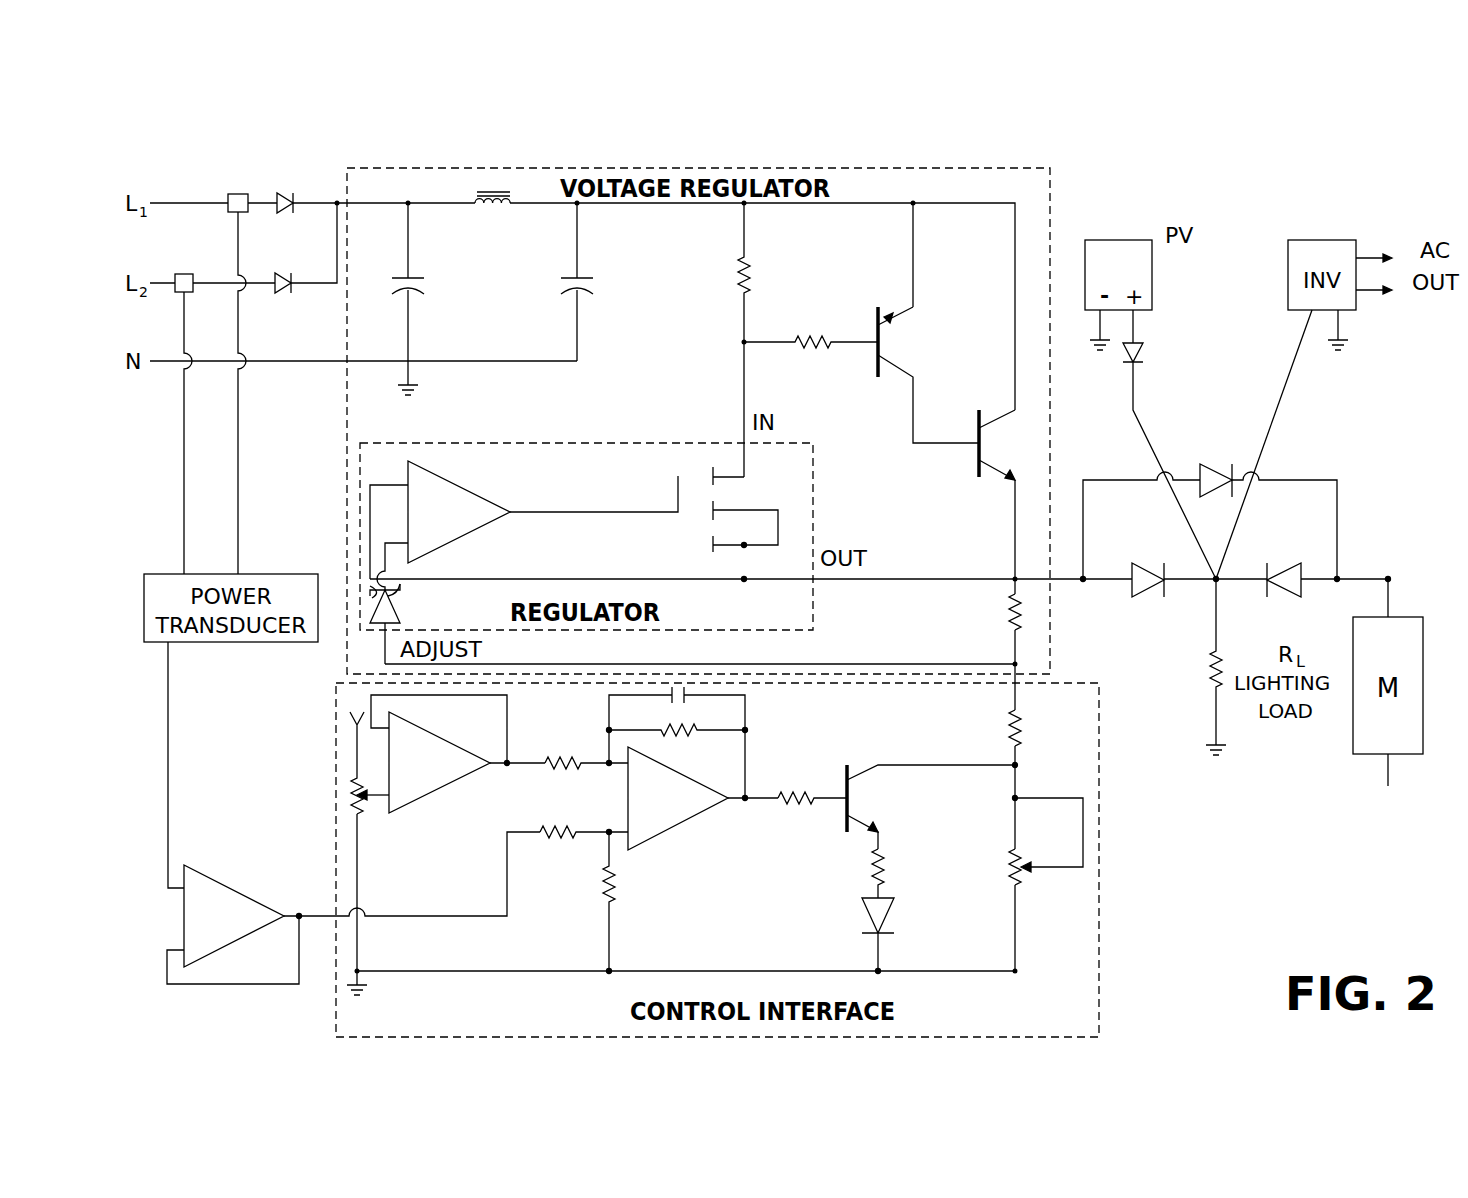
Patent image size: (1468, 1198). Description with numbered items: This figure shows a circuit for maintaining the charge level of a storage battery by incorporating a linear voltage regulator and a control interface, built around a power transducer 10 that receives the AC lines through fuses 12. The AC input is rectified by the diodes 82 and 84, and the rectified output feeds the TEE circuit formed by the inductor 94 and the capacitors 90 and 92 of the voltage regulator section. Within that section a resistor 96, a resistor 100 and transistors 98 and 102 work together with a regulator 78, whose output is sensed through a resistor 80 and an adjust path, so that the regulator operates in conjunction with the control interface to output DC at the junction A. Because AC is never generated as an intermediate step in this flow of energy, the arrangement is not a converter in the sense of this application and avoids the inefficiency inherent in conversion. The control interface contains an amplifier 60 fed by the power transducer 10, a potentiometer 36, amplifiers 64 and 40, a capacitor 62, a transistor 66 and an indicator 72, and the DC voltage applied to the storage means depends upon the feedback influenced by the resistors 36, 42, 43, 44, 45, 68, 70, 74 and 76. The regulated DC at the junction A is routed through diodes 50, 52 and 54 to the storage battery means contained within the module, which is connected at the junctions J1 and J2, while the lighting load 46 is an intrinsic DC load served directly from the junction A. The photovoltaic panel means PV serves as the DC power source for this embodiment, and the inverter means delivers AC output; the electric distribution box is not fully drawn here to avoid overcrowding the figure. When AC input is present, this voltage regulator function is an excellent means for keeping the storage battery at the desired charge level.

The power transducer 10 is at (268, 642).
The fuse 12 is at (238, 194).
The resistor 36 is at (362, 803).
The operational amplifier 40 is at (688, 812).
The resistor 42 is at (692, 735).
The resistor 43 is at (556, 840).
The resistor 44 is at (548, 757).
The resistor 45 is at (612, 875).
The lighting load 46 is at (1208, 676).
The diode 50 is at (1150, 598).
The diode 52 is at (1283, 598).
The diode 54 is at (1226, 450).
The operational amplifier 60 is at (250, 905).
The capacitor 62 is at (670, 698).
The operational amplifier 64 is at (462, 778).
The transistor 66 is at (845, 776).
The resistor 68 is at (812, 804).
The resistor 70 is at (884, 860).
The light emitting diode 72 is at (892, 905).
The resistor 74 is at (1020, 732).
The resistor 76 is at (1019, 886).
The regulator 78 is at (813, 505).
The resistor 80 is at (1008, 606).
The diode 82 is at (287, 212).
The diode 84 is at (285, 292).
The TEE circuit component 90 is at (420, 282).
The TEE circuit component 92 is at (562, 280).
The TEE circuit component 94 is at (476, 192).
The resistor 96 is at (748, 262).
The transistor 98 is at (878, 318).
The resistor 100 is at (806, 336).
The transistor 102 is at (979, 420).
The junction A is at (1213, 584).
The junction J1 is at (1390, 578).
The junction J2 is at (1388, 786).
The photovoltaic panel means PV is at (1195, 252).